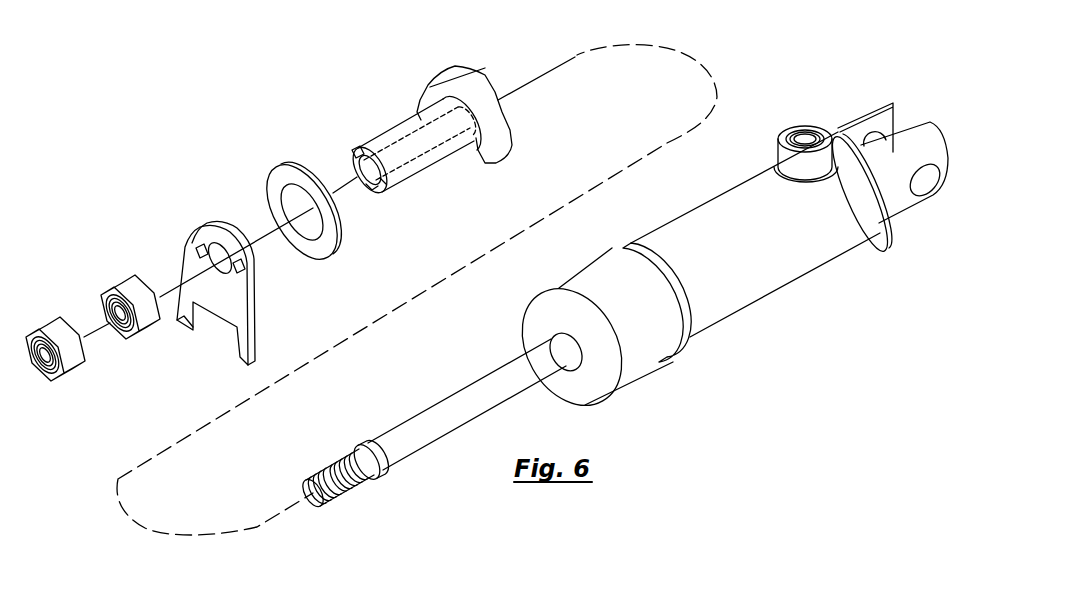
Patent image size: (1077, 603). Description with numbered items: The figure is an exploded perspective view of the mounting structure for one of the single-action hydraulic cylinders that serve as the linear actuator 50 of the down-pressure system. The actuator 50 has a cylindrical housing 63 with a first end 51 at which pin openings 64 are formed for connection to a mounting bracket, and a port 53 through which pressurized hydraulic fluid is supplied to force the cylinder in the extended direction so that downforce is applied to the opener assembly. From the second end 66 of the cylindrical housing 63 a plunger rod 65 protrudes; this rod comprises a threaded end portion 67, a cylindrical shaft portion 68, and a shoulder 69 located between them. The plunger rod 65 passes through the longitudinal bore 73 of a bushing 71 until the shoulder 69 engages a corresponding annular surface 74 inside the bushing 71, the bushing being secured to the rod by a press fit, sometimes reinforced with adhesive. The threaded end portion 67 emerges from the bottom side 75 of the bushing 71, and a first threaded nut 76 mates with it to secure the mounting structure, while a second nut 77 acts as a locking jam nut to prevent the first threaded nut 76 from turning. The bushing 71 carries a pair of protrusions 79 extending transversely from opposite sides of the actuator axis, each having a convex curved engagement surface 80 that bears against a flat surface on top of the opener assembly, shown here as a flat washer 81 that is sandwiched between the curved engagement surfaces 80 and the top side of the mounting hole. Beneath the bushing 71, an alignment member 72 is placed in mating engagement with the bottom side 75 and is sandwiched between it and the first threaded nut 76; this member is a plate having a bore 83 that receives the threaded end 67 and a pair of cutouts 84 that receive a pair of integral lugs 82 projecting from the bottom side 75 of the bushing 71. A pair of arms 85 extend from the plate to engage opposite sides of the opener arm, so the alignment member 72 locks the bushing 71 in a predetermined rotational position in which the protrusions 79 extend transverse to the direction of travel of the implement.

The linear actuator 50 is at (725, 250).
The first end 51 is at (880, 250).
The port 53 is at (800, 135).
The cylindrical housing 63 is at (753, 183).
The pin openings 64 is at (931, 190).
The plunger rod 65 is at (412, 424).
The second end 66 is at (610, 397).
The threaded end portion 67 is at (317, 470).
The cylindrical shaft portion 68 is at (425, 412).
The shoulder 69 is at (363, 443).
The bushing 71 is at (401, 132).
The alignment member 72 is at (215, 283).
The longitudinal bore 73 is at (368, 165).
The annular surface 74 is at (410, 167).
The bottom side 75 is at (352, 152).
The first threaded nut 76 is at (115, 288).
The second nut 77 is at (45, 330).
The protrusions 79 is at (434, 114).
The curved engagement surface 80 is at (422, 98).
The flat washer 81 is at (272, 183).
The lugs 82 is at (382, 185).
The bore 83 is at (210, 252).
The cutouts 84 is at (202, 262).
The arms 85 is at (240, 347).